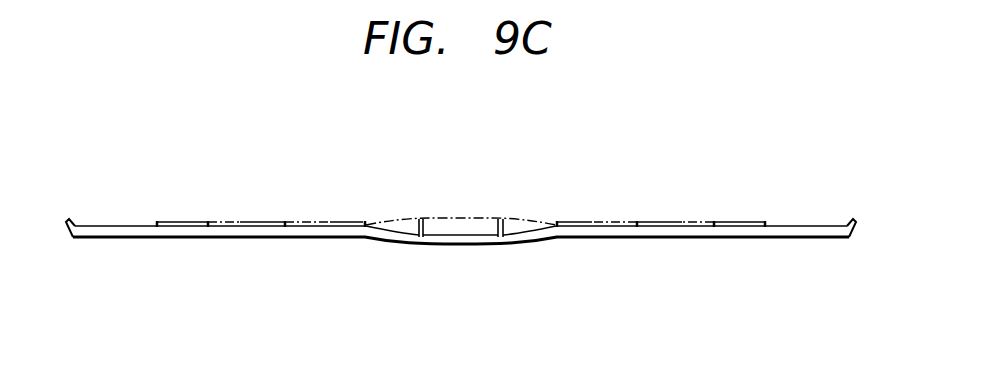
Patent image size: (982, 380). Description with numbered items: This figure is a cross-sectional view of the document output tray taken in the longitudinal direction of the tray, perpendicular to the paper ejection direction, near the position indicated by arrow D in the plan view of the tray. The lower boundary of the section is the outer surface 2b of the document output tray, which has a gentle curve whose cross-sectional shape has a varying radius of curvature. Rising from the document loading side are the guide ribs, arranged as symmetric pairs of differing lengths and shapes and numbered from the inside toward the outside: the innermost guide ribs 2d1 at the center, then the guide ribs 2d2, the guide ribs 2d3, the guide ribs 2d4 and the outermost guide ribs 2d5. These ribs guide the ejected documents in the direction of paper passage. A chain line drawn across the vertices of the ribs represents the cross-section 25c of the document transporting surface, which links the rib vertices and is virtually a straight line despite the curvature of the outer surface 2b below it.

The outer surface 2b is at (823, 270).
The guide rib 2d1 is at (492, 241).
The guide rib 2d2 is at (378, 241).
The guide rib 2d3 is at (285, 221).
The guide rib 2d4 is at (208, 221).
The guide rib 2d5 is at (157, 221).
The cross-section of document transporting surface 25c is at (484, 218).